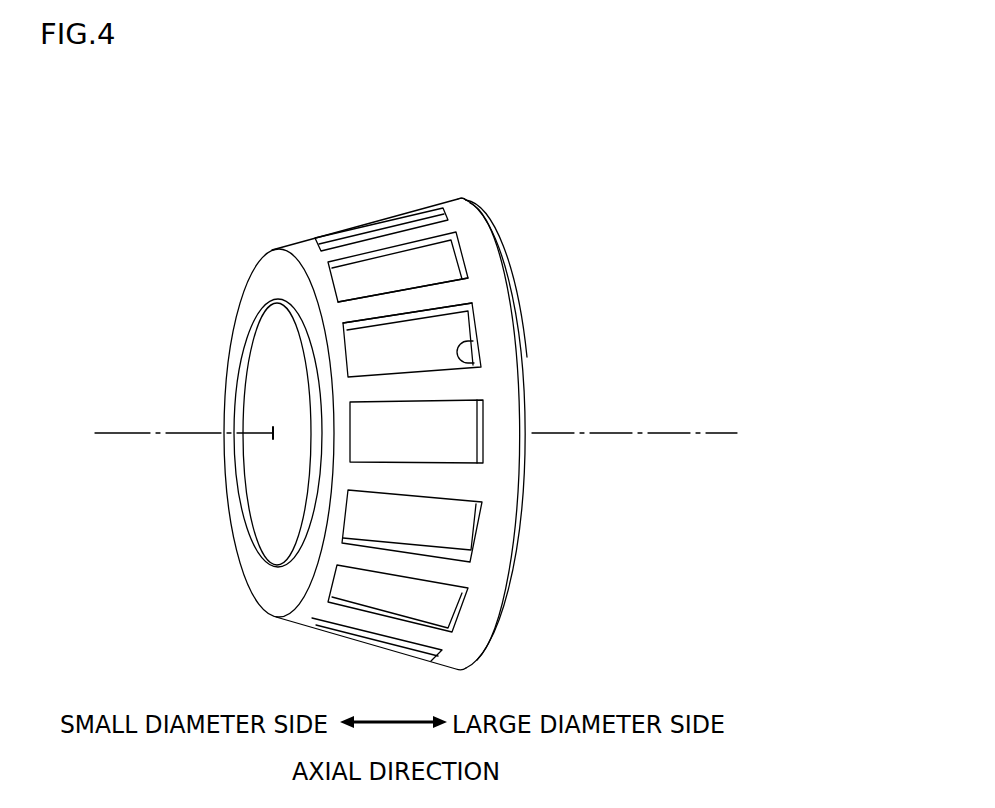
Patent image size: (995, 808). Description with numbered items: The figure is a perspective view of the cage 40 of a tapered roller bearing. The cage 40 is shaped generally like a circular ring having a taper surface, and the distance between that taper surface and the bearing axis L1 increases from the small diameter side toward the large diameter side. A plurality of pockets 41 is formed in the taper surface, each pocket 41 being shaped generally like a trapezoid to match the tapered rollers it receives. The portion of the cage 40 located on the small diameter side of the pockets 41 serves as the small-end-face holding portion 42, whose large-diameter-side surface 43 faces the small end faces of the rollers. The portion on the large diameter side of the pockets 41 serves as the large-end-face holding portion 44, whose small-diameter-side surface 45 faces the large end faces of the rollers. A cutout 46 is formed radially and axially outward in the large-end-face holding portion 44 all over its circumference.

The cage 40 is at (421, 363).
The pocket 41 is at (435, 344).
The small-end-face holding portion 42 is at (332, 357).
The large-diameter-side surface 43 is at (357, 316).
The large-end-face holding portion 44 is at (495, 332).
The small-diameter-side surface 45 is at (463, 365).
The cutout 46 is at (476, 203).
The bearing axis L1 is at (712, 428).